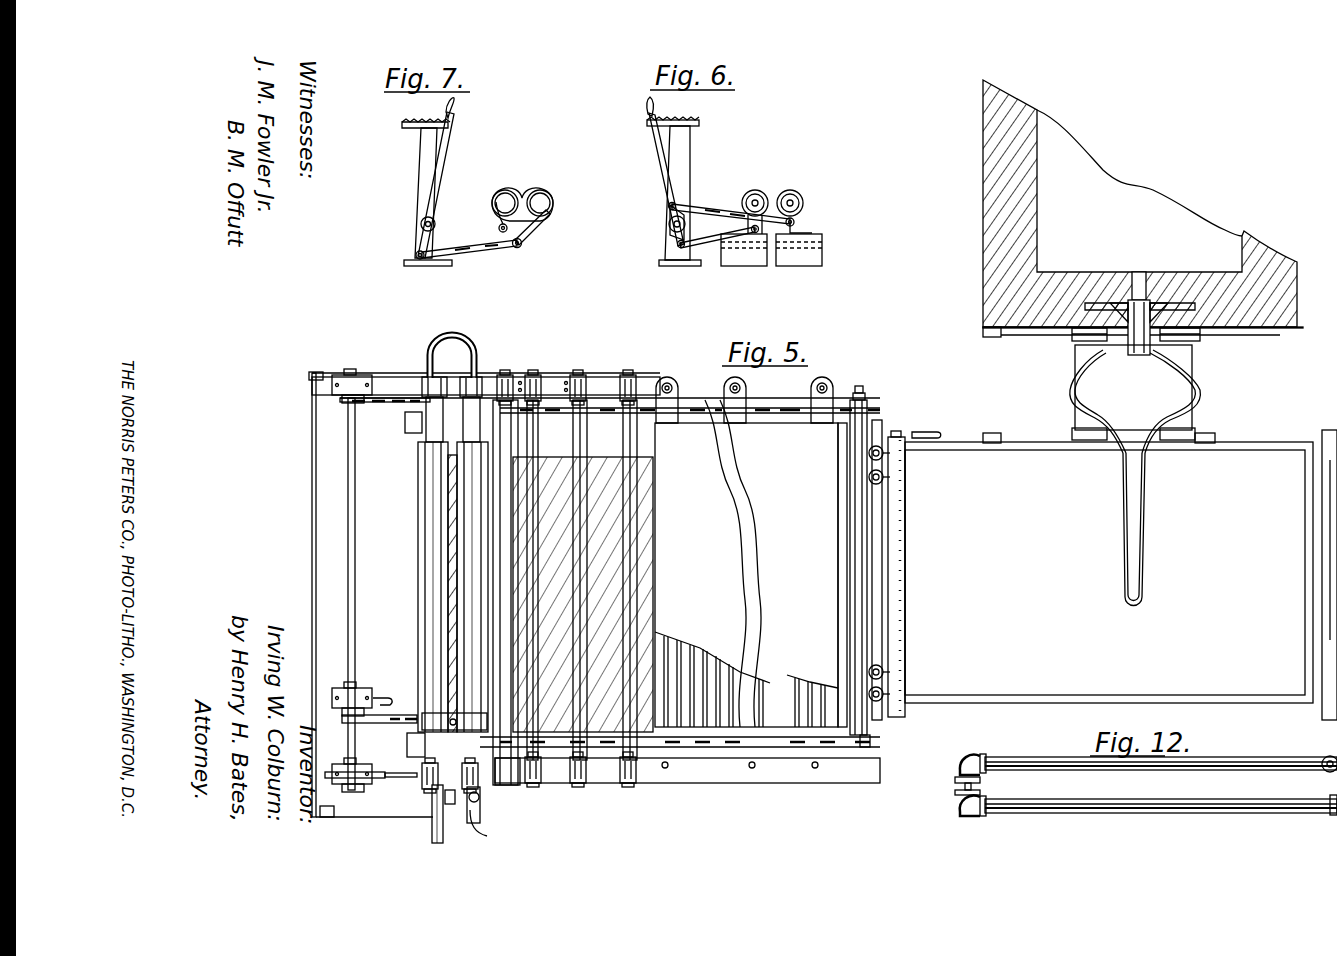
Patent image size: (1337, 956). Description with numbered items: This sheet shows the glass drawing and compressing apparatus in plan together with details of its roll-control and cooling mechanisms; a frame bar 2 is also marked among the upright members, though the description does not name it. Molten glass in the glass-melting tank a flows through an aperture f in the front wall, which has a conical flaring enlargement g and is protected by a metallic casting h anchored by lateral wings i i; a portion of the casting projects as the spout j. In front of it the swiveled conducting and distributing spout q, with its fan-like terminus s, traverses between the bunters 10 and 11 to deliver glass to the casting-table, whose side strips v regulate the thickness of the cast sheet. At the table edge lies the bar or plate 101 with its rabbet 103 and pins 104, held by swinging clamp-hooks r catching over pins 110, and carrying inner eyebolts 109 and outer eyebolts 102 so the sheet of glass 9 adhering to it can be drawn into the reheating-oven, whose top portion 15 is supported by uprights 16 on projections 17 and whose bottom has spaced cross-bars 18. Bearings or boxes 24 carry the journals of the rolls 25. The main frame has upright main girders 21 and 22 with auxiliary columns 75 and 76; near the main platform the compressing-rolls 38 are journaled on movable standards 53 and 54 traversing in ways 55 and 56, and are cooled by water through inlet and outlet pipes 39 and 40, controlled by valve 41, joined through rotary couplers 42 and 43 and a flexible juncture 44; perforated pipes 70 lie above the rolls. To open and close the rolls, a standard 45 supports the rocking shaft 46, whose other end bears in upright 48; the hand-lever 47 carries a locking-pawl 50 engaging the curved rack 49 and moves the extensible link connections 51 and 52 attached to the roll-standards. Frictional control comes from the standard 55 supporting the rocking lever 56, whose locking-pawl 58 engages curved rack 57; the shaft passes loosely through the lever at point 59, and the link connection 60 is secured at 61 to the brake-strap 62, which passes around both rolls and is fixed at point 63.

In FIG. 5, the frame bar 2 is at (501, 423).
In FIG. 5, the sheet of glass 9 is at (458, 510).
In FIG. 5, the bunter 10 is at (992, 391).
In FIG. 5, the bunter 11 is at (1191, 385).
In FIG. 5, the top portion of the oven 15 is at (746, 563).
In FIG. 5, the uprights 16 is at (751, 767).
In FIG. 5, the projections 17 is at (754, 399).
In FIG. 5, the cross-bars 18 is at (746, 679).
In FIG. 5, the upright main girder 21 is at (466, 376).
In FIG. 5, the upright main girder 22 is at (484, 832).
In FIG. 5, the bearings or boxes 24 is at (582, 374).
In FIG. 5, the rolls 25 is at (603, 432).
In FIG. 7, the compressing-rolls 38 is at (522, 204).
In FIG. 6, the compressing-rolls 38 is at (757, 192).
In FIG. 5, the compressing-rolls 38 is at (441, 567).
In FIG. 5, the inlet pipe 39 is at (487, 808).
In FIG. 5, the outlet pipe 40 is at (426, 816).
In FIG. 5, the valve 41 is at (481, 795).
In FIG. 5, the rotary coupler 42 is at (417, 775).
In FIG. 5, the rotary coupler 43 is at (478, 782).
In FIG. 5, the flexible juncture 44 is at (452, 348).
In FIG. 6, the standard 45 is at (685, 196).
In FIG. 6, the rocking shaft 46 is at (662, 222).
In FIG. 5, the rocking shaft 46 is at (357, 602).
In FIG. 6, the hand-lever 47 is at (656, 179).
In FIG. 5, the hand-lever 47 is at (335, 772).
In FIG. 5, the upright 48 is at (352, 378).
In FIG. 6, the curved rack 49 is at (684, 129).
In FIG. 6, the locking-pawl 50 is at (667, 108).
In FIG. 6, the extensible link connection 51 is at (730, 203).
In FIG. 6, the extensible link connection 52 is at (717, 232).
In FIG. 6, the movable standard 53 is at (742, 222).
In FIG. 6, the movable standard 54 is at (808, 221).
In FIG. 7, the ways / standard 55 is at (423, 162).
In FIG. 6, the ways / standard 55 is at (744, 250).
In FIG. 7, the ways / rocking lever 56 is at (447, 150).
In FIG. 6, the ways / rocking lever 56 is at (799, 250).
In FIG. 5, the ways / rocking lever 56 is at (389, 698).
In FIG. 7, the curved rack 57 is at (413, 130).
In FIG. 7, the locking-pawl 58 is at (435, 108).
In FIG. 5, the fulcrum point 59 is at (365, 702).
In FIG. 7, the link connection 60 is at (466, 244).
In FIG. 7, the attachment point 61 is at (530, 250).
In FIG. 7, the brake-strap 62 is at (540, 227).
In FIG. 5, the brake-strap 62 is at (454, 718).
In FIG. 7, the fixed point 63 is at (492, 218).
In FIG. 12, the perforated pipes 70 is at (1146, 795).
In FIG. 5, the auxiliary column 75 is at (318, 372).
In FIG. 5, the auxiliary column 76 is at (372, 606).
In FIG. 5, the bar or plate 101 is at (893, 437).
In FIG. 5, the eyebolts 102 is at (880, 445).
In FIG. 5, the rabbet 103 is at (928, 431).
In FIG. 5, the pins 104 is at (884, 477).
In FIG. 5, the inner eyebolts 109 is at (884, 480).
In FIG. 5, the pins 110 is at (896, 709).
In FIG. 5, the glass-melting tank a is at (1143, 208).
In FIG. 5, the aperture f is at (1139, 301).
In FIG. 5, the flaring enlargement g is at (1205, 335).
In FIG. 5, the metallic casting h is at (1070, 338).
In FIG. 5, the lateral wings i is at (1097, 302).
In FIG. 5, the spout j is at (1132, 392).
In FIG. 5, the fan-like terminus s is at (1135, 401).
In FIG. 5, the swiveled conducting and distributing spout q is at (1146, 483).
In FIG. 5, the side strips v is at (1109, 572).
In FIG. 5, the swinging clamp-hooks r is at (912, 720).